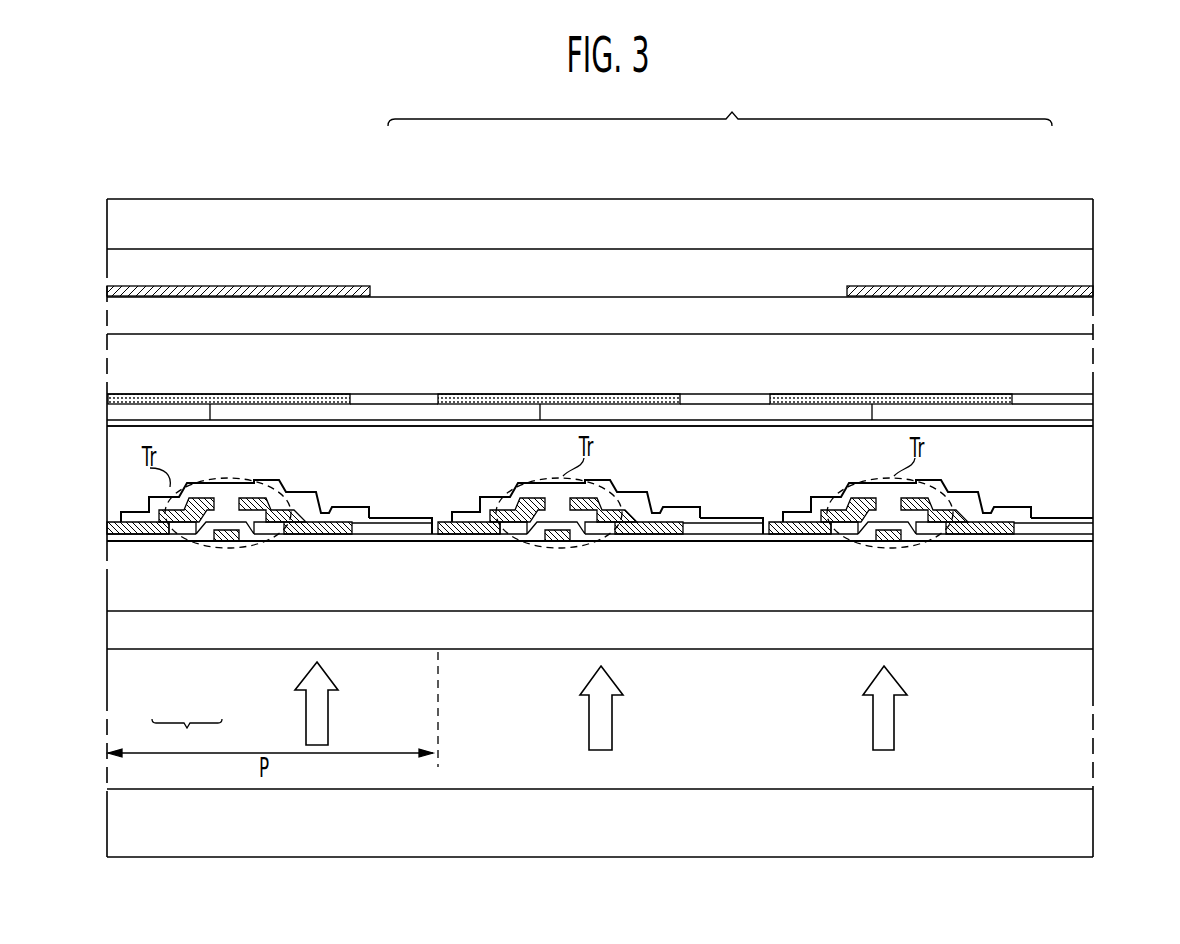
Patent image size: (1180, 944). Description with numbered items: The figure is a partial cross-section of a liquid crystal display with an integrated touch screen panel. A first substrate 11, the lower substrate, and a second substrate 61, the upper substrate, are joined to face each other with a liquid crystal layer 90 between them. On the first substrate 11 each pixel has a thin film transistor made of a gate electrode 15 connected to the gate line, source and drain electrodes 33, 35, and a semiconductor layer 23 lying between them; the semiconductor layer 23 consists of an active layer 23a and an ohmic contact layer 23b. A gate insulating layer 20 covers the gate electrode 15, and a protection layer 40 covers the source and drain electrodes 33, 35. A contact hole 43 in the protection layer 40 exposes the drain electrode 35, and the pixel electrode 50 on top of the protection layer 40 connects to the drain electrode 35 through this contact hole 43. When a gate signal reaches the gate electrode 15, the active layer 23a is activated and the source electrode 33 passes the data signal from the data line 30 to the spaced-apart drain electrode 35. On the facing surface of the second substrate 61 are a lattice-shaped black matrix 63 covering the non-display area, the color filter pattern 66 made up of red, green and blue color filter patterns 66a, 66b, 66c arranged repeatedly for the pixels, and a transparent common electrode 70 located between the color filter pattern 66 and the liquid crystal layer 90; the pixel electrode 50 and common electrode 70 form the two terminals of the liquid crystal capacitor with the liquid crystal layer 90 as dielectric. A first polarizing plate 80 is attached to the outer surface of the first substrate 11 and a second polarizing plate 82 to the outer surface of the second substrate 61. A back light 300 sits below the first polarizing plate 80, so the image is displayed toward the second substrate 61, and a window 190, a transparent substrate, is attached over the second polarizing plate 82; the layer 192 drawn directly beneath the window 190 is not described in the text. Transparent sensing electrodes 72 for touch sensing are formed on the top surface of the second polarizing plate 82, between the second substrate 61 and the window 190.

The window 190 is at (1082, 220).
The upper polarizer / layer 192 is at (1082, 268).
The sensing electrodes 72 is at (176, 286).
The second polarizing plate 82 is at (1082, 317).
The second substrate 61 is at (1082, 365).
The black matrix 63 is at (233, 394).
The common electrode 70 is at (1082, 418).
The color filter pattern 66 is at (720, 104).
The red color filter pattern 66a is at (402, 403).
The green color filter pattern 66b is at (733, 403).
The blue color filter pattern 66c is at (1030, 403).
The liquid crystal layer 90 is at (1082, 451).
The gate insulating layer 20 is at (367, 541).
The gate electrode 15 is at (227, 540).
The data line 30 is at (118, 535).
The active layer 23a is at (180, 528).
The ohmic contact layer 23b is at (196, 534).
The semiconductor layer 23 is at (187, 736).
The source electrode 33 is at (198, 497).
The drain electrode 35 is at (247, 497).
The contact hole 43 is at (322, 500).
The pixel electrode 50 is at (417, 517).
The protection layer 40 is at (375, 527).
The first substrate 11 is at (1082, 584).
The first polarizing plate 80 is at (1082, 634).
The back light 300 is at (1082, 820).